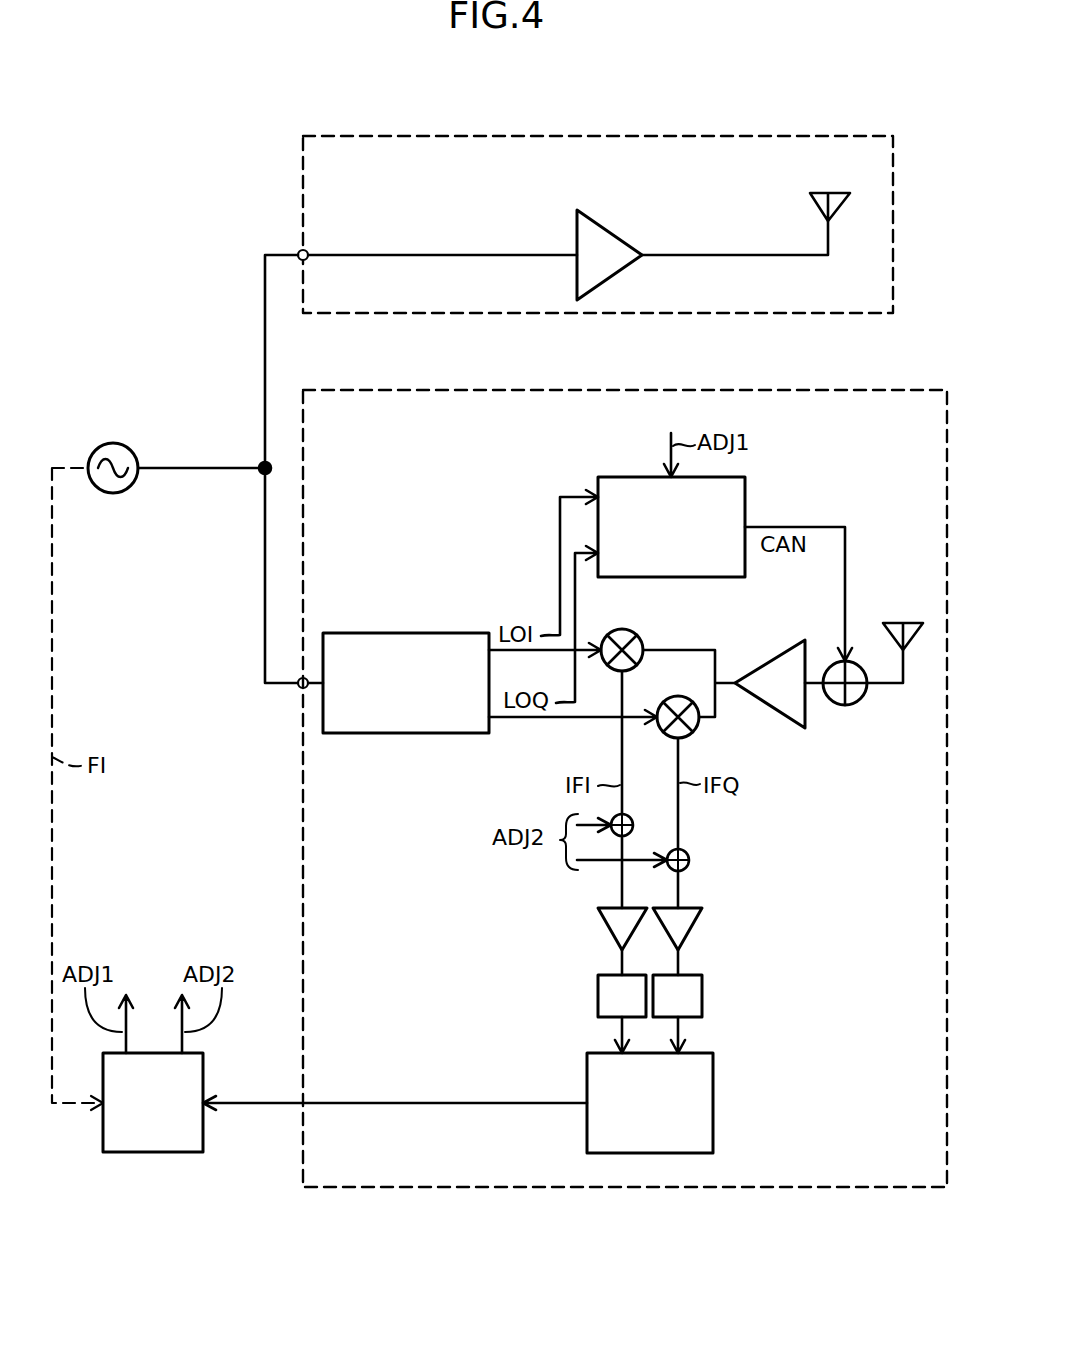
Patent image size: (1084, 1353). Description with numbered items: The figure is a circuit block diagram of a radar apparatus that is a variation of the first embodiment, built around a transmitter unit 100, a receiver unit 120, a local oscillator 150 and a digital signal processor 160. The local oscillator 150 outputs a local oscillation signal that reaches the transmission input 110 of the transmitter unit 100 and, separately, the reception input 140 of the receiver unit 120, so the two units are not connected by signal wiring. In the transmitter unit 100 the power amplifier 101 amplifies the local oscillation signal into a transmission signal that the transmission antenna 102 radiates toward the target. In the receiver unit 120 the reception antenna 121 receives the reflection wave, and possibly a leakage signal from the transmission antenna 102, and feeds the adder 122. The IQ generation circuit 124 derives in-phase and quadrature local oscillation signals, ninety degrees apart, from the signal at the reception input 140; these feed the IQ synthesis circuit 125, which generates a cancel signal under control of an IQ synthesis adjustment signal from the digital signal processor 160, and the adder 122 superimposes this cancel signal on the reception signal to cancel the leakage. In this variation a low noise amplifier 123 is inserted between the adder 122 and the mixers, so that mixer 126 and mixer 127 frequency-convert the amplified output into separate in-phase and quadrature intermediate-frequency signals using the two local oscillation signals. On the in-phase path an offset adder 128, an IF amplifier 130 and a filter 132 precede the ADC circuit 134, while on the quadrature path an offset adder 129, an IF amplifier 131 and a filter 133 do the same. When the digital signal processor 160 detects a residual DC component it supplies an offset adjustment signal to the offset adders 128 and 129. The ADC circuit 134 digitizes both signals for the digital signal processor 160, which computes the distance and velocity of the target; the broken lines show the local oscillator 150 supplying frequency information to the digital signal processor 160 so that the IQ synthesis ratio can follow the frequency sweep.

The transmitter unit 100 is at (858, 135).
The power amplifier 101 is at (608, 232).
The transmission antenna 102 is at (838, 192).
The transmission input 110 is at (299, 252).
The receiver unit 120 is at (858, 389).
The reception antenna 121 is at (910, 622).
The adder 122 is at (862, 700).
The low noise amplifier 123 is at (773, 655).
The IQ generation circuit 124 is at (403, 632).
The IQ synthesis circuit 125 is at (745, 500).
The mixer MIXI 126 is at (643, 640).
The mixer MIXQ 127 is at (695, 733).
The offset adder 128 is at (633, 820).
The offset adder 129 is at (689, 855).
The IF amplifier 130 is at (600, 922).
The IF amplifier 131 is at (700, 922).
The filter 132 is at (598, 998).
The filter 133 is at (702, 998).
The ADC circuit 134 is at (713, 1105).
The reception input 140 is at (298, 688).
The local oscillator 150 is at (109, 494).
The digital signal processor 160 is at (203, 1133).